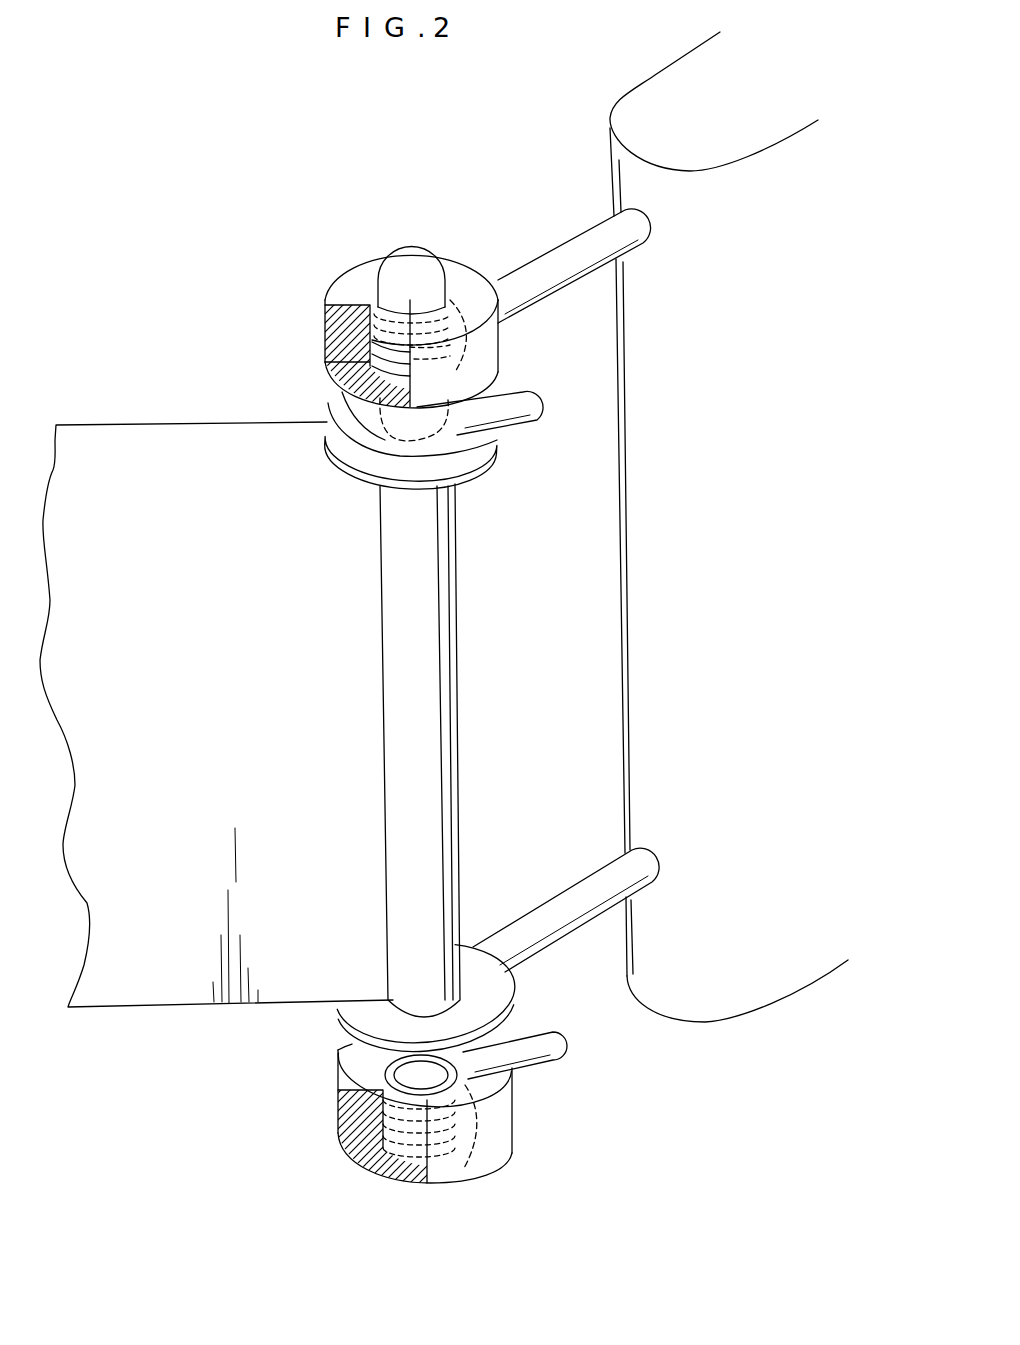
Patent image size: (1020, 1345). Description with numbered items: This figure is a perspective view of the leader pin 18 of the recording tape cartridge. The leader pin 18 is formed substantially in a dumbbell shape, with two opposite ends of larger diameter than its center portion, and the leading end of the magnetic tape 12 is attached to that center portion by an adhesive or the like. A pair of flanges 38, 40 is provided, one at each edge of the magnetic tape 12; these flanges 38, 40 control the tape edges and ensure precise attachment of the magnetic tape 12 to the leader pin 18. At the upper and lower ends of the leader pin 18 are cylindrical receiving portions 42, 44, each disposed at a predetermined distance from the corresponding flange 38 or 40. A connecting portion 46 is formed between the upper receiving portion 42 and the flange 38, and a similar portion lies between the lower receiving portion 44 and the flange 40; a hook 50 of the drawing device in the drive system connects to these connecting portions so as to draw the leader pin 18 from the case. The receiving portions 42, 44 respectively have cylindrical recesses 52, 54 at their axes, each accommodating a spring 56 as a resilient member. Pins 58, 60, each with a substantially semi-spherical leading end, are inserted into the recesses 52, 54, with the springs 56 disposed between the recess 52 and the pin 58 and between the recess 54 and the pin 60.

The magnetic tape 12 is at (202, 442).
The leader pin 18 is at (493, 199).
The flange 38 is at (480, 455).
The flange 40 is at (512, 986).
The receiving portion 42 is at (465, 272).
The receiving portion 44 is at (512, 1131).
The connecting portion 46 is at (498, 395).
The hook 50 is at (532, 425).
The recess 52 is at (331, 323).
The recess 54 is at (338, 1101).
The spring 56 is at (325, 372).
The pin 58 is at (403, 258).
The pin 60 is at (446, 1166).